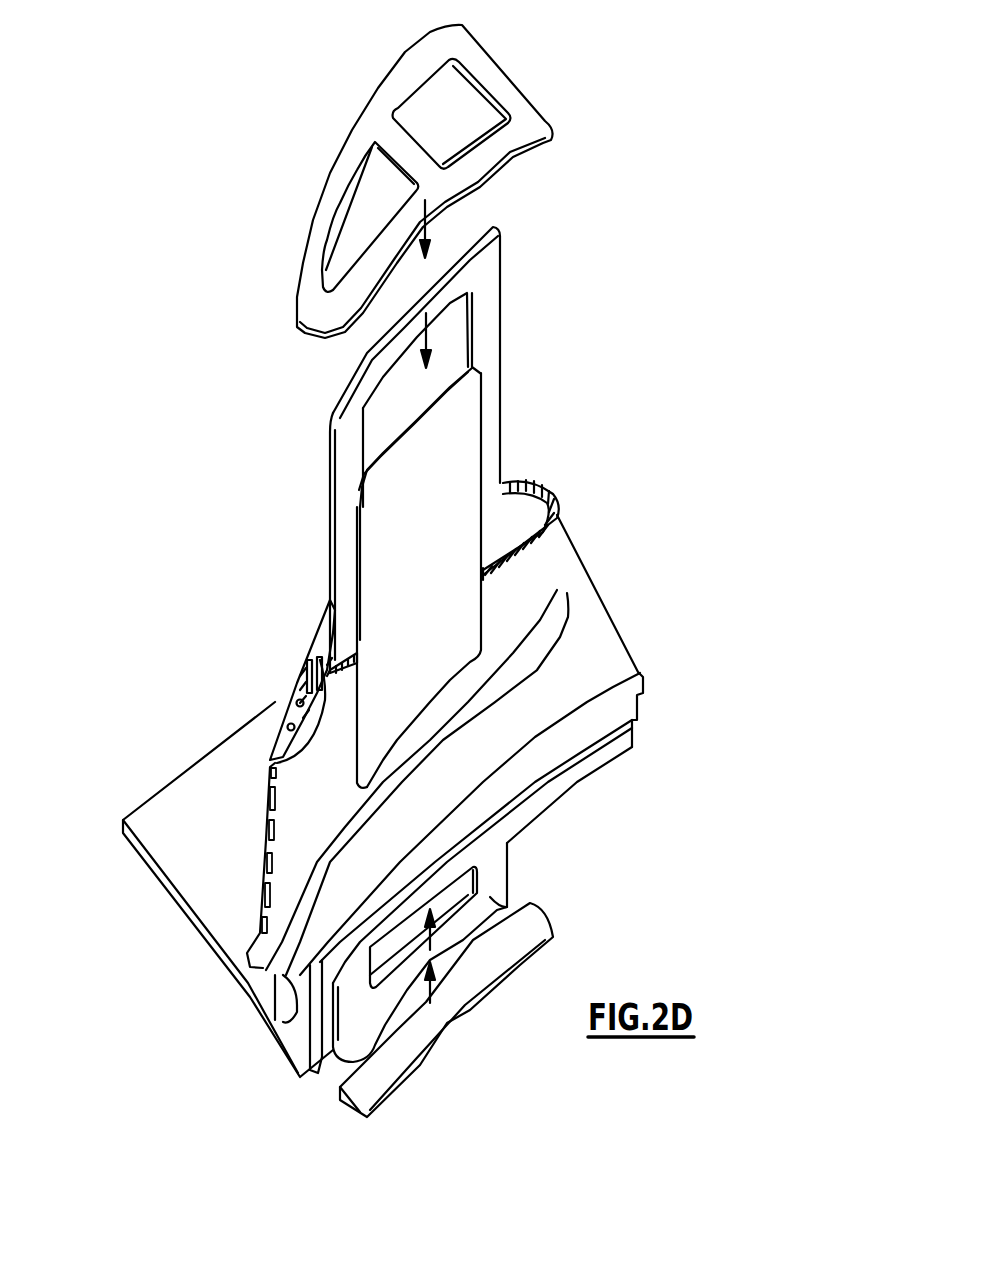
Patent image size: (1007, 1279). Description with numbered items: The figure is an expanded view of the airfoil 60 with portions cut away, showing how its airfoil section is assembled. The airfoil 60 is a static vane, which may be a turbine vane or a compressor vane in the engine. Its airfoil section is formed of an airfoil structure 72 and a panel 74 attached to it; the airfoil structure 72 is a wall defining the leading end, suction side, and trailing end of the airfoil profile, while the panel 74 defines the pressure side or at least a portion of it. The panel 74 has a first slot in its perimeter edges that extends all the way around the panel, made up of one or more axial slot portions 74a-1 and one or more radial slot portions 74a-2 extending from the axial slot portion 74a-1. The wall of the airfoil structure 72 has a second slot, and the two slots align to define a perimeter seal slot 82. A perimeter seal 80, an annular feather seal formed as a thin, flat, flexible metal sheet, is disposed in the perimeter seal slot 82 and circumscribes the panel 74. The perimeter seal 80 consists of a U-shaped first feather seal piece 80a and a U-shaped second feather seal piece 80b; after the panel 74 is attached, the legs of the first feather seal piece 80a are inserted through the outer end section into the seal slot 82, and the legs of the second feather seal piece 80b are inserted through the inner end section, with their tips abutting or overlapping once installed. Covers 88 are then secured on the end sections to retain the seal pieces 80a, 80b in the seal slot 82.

The airfoil 60 is at (121, 737).
The airfoil structure 72 is at (533, 570).
The panel 74 is at (395, 578).
The axial slot portion 74a-1 is at (355, 553).
The radial slot portion 74a-2 is at (377, 460).
The perimeter seal 80 is at (483, 283).
The first feather seal piece 80a is at (348, 475).
The second feather seal piece 80b is at (497, 899).
The perimeter seal slot 82 is at (282, 780).
The cover 88 is at (486, 64).